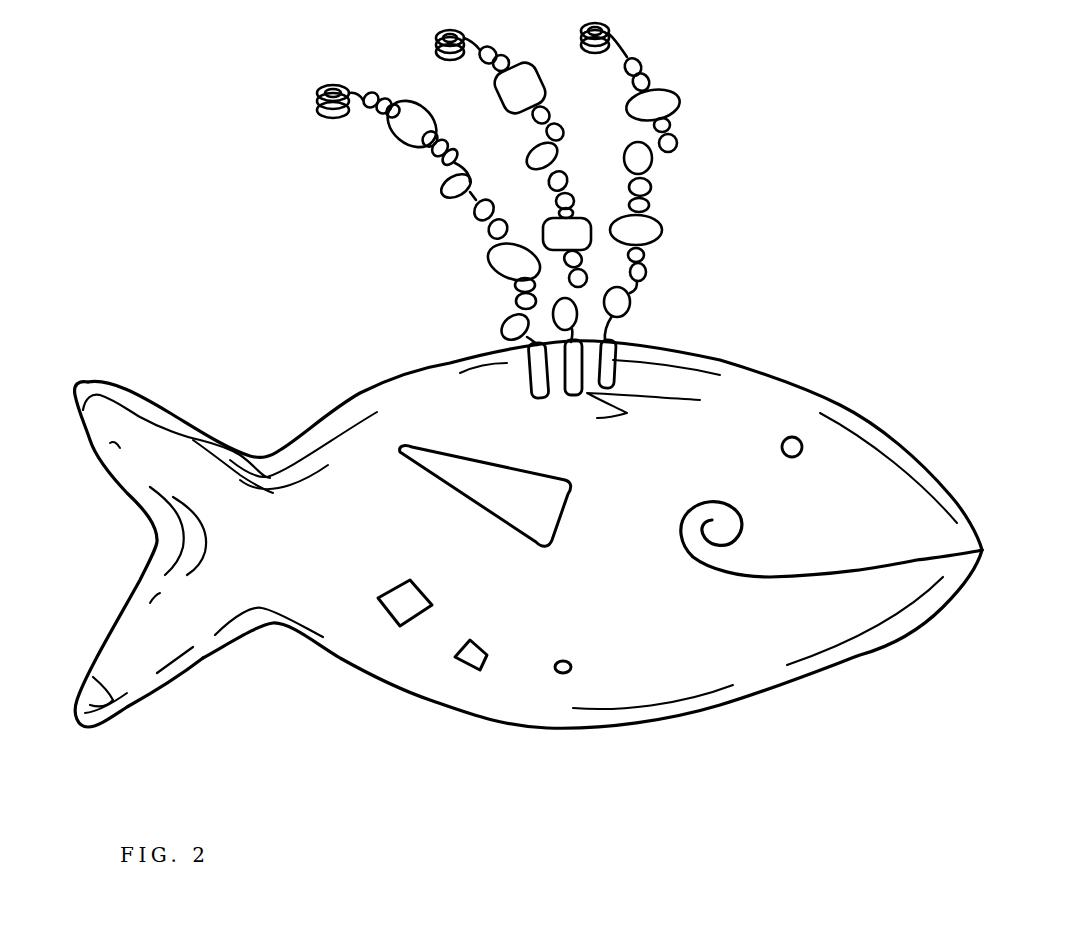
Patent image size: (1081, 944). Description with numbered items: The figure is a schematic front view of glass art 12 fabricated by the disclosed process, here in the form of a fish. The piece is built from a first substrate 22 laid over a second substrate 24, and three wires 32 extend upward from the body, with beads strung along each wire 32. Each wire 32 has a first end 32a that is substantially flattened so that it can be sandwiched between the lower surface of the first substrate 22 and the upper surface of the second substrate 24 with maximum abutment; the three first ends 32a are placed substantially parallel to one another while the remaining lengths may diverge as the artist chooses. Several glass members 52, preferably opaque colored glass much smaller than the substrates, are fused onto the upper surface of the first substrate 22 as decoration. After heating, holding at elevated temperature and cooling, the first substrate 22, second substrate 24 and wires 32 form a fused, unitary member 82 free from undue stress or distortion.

The glass art 12 is at (178, 262).
The first substrate 22 is at (153, 433).
The second substrate 24 is at (87, 375).
The wire 32 is at (917, 562).
The first end 32a is at (613, 388).
The glass member 52 is at (796, 438).
The fused, unitary member 82 is at (943, 612).